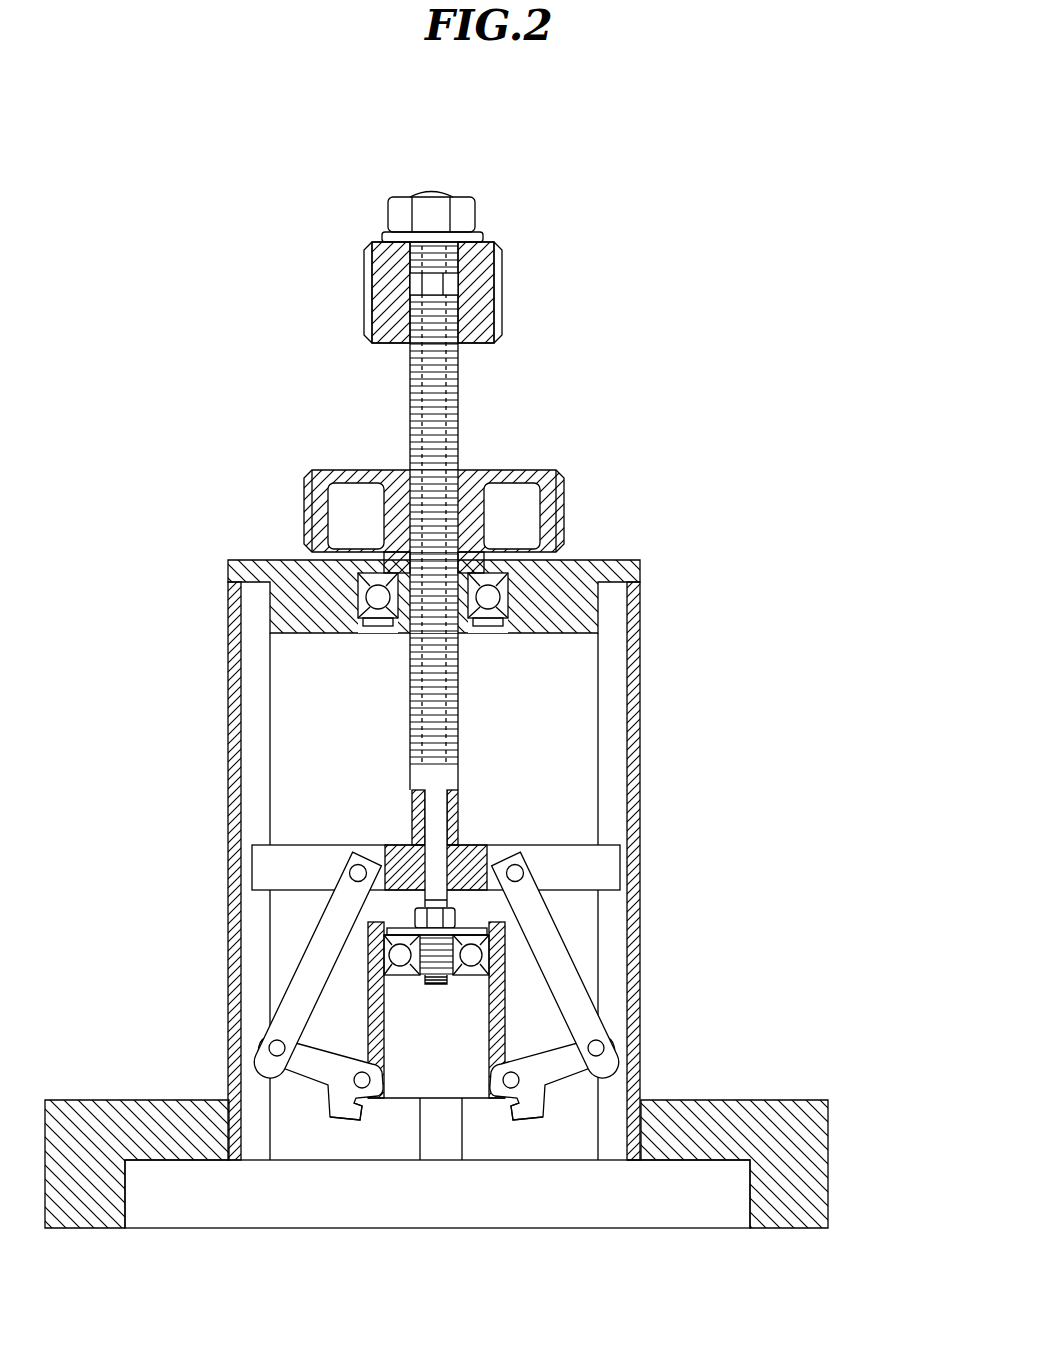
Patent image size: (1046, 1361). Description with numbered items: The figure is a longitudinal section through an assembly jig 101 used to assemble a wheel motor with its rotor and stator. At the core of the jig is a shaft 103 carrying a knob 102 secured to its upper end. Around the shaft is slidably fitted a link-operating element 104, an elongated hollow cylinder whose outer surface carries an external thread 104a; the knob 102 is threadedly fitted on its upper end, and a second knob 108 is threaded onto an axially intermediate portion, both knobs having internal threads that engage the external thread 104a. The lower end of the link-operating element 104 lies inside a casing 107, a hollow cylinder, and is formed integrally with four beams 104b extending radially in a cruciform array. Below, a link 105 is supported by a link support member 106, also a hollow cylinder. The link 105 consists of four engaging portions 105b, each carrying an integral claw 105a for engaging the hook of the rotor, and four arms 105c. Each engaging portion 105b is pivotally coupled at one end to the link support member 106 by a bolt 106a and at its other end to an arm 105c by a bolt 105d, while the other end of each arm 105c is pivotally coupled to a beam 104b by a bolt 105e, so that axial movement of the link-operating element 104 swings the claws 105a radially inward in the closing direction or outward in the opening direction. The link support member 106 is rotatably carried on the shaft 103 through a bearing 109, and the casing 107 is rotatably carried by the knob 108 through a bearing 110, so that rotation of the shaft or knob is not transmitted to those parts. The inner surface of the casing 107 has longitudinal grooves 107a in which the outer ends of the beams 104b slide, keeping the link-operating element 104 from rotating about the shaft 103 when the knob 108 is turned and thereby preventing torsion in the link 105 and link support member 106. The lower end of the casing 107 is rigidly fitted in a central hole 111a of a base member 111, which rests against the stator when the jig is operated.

The assembly jig 101 is at (483, 678).
The knob 102 is at (502, 272).
The shaft 103 is at (437, 285).
The link-operating element 104 is at (568, 588).
The external thread 104a is at (450, 387).
The beams 104b is at (578, 845).
The link 105 is at (540, 976).
The claw 105a is at (541, 1118).
The engaging portions 105b is at (572, 1082).
The arms 105c is at (557, 930).
The bolt 105d is at (604, 1050).
The bolt 105e is at (516, 866).
The link support member 106 is at (588, 1070).
The bolt 106a is at (506, 1099).
The casing 107 is at (640, 790).
The longitudinal grooves 107a is at (628, 700).
The knob 108 is at (566, 510).
The bearing 109 is at (498, 952).
The bearing 110 is at (492, 594).
The base member 111 is at (483, 1164).
The central hole 111a is at (640, 1140).